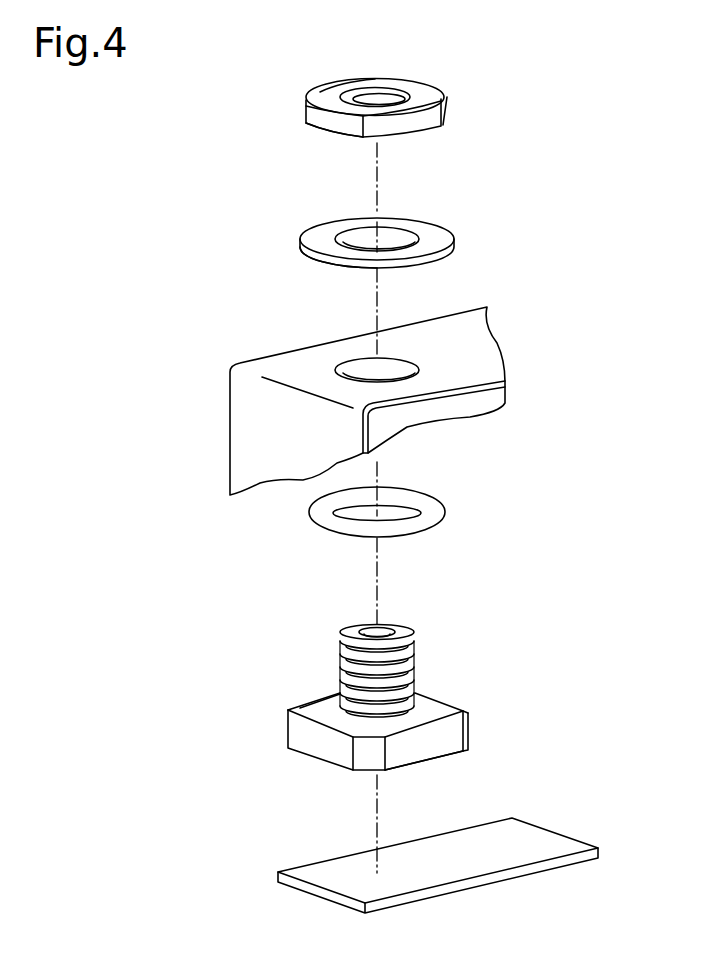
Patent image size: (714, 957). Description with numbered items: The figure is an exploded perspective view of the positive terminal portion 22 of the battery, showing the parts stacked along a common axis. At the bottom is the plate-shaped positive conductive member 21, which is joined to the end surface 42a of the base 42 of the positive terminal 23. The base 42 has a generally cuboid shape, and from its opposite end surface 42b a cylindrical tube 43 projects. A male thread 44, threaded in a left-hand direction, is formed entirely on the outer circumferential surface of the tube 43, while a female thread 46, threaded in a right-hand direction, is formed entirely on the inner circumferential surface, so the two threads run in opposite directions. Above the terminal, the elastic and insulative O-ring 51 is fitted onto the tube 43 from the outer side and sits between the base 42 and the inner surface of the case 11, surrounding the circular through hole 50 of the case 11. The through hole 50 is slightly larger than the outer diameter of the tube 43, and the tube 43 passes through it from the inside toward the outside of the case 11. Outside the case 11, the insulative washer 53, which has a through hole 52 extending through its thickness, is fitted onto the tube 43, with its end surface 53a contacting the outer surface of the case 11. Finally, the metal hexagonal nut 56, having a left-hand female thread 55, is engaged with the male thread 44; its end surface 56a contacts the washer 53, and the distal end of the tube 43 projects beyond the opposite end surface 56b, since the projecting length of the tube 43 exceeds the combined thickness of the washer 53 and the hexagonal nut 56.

The case 11 is at (298, 360).
The positive conductive member 21 is at (555, 838).
The positive terminal portion 22 is at (605, 99).
The positive terminal 23 is at (496, 632).
The base 42 is at (363, 740).
The end surface 42a is at (423, 766).
The end surface 42b is at (308, 709).
The cylindrical tube 43 is at (378, 648).
The male thread 44 is at (414, 668).
The female thread 46 is at (368, 631).
The through hole 50 is at (398, 367).
The O-ring 51 is at (447, 505).
The through hole 52 is at (362, 236).
The washer 53 is at (447, 233).
The end surface 53a is at (318, 265).
The female thread 55 is at (360, 91).
The hexagonal nut 56 is at (447, 99).
The end surface 56a is at (328, 138).
The end surface 56b is at (320, 93).